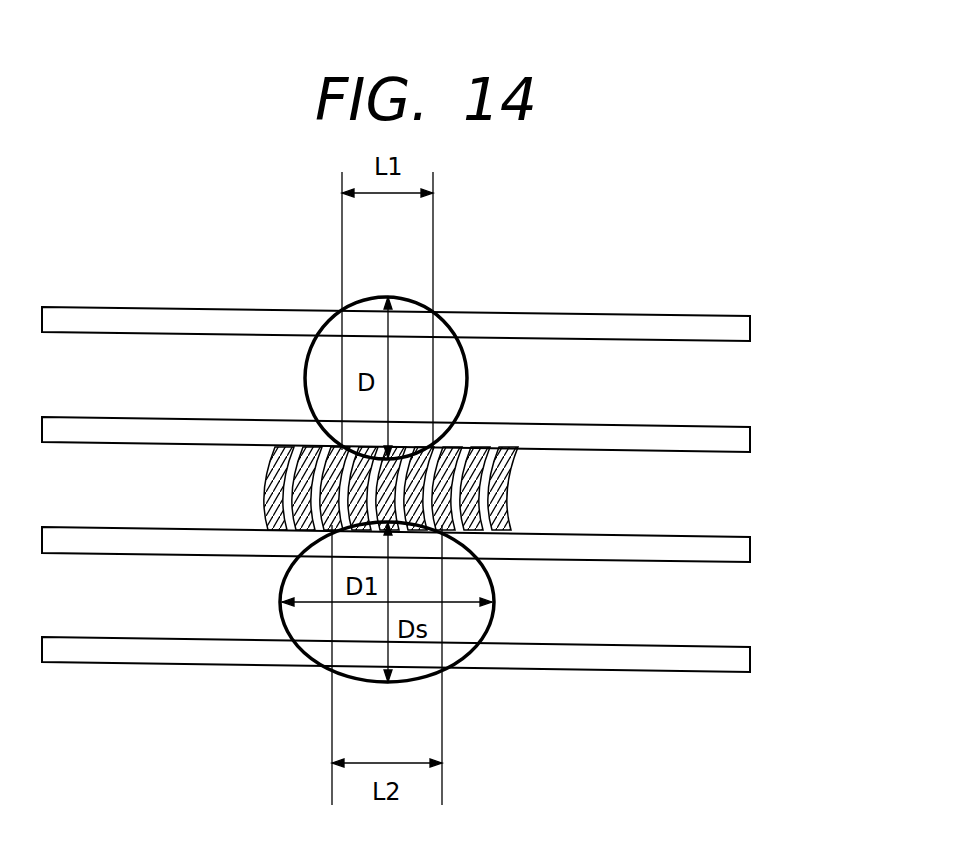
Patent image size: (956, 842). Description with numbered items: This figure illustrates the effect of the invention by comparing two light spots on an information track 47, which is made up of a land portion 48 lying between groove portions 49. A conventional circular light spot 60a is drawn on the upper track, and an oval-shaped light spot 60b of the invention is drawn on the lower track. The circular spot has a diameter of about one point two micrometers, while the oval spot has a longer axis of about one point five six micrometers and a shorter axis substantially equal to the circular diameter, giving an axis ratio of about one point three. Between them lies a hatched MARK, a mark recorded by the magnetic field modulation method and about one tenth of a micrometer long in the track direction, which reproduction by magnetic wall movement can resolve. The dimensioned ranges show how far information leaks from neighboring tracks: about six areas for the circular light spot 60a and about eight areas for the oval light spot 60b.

The information track 47 is at (822, 363).
The land portion 48 is at (738, 380).
The groove portions 49 is at (738, 327).
The conventional circular light spot 60a is at (470, 380).
The oval-shaped light spot 60b is at (494, 612).
The mark MARK is at (500, 490).